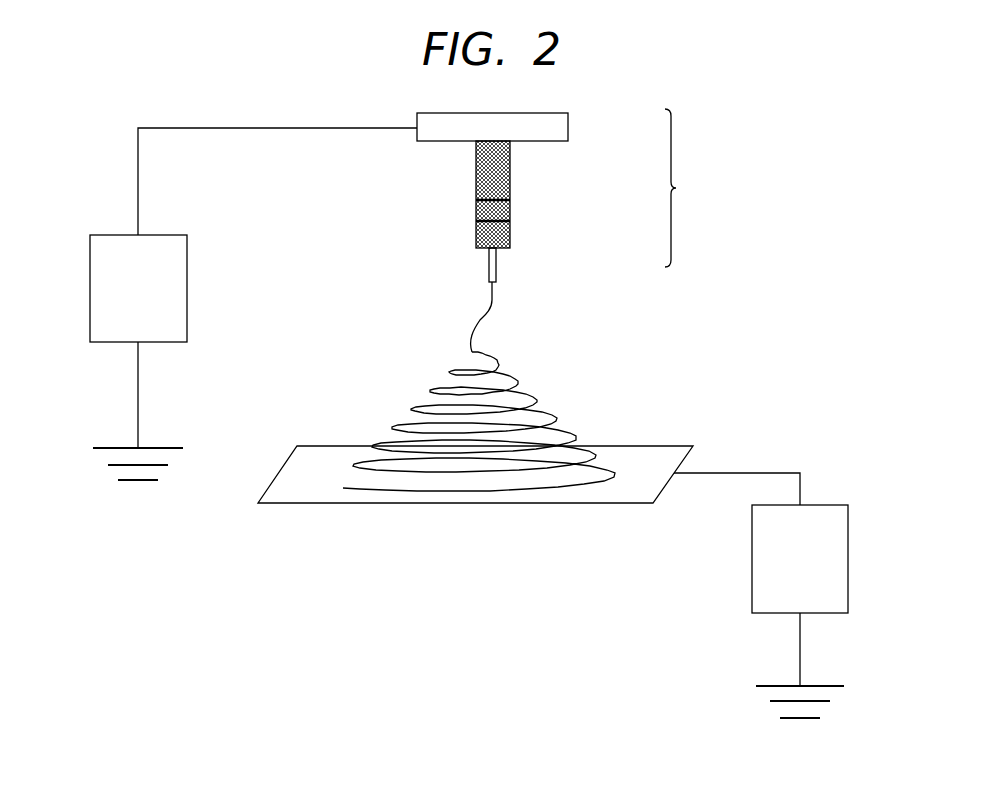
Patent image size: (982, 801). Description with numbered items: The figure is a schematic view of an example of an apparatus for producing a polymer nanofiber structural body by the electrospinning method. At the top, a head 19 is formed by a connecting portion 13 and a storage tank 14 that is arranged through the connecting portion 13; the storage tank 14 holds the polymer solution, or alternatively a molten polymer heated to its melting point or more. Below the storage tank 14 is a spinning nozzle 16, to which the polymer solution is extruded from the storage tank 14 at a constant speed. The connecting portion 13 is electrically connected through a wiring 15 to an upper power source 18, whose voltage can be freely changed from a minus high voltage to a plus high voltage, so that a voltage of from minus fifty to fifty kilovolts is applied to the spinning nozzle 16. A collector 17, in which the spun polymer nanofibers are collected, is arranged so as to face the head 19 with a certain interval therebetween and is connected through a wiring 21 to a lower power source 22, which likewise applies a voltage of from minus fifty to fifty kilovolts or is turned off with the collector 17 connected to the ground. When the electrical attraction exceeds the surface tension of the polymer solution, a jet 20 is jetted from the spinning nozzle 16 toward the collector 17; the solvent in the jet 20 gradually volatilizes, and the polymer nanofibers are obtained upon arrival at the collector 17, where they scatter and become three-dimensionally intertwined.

The connecting portion 13 is at (570, 128).
The storage tank 14 is at (512, 183).
The wiring 15 is at (325, 128).
The spinning nozzle 16 is at (481, 255).
The collector 17 is at (662, 445).
The upper power source 18 is at (145, 346).
The head 19 is at (688, 188).
The jet 20 is at (497, 295).
The wiring 21 is at (750, 473).
The lower power source 22 is at (805, 618).